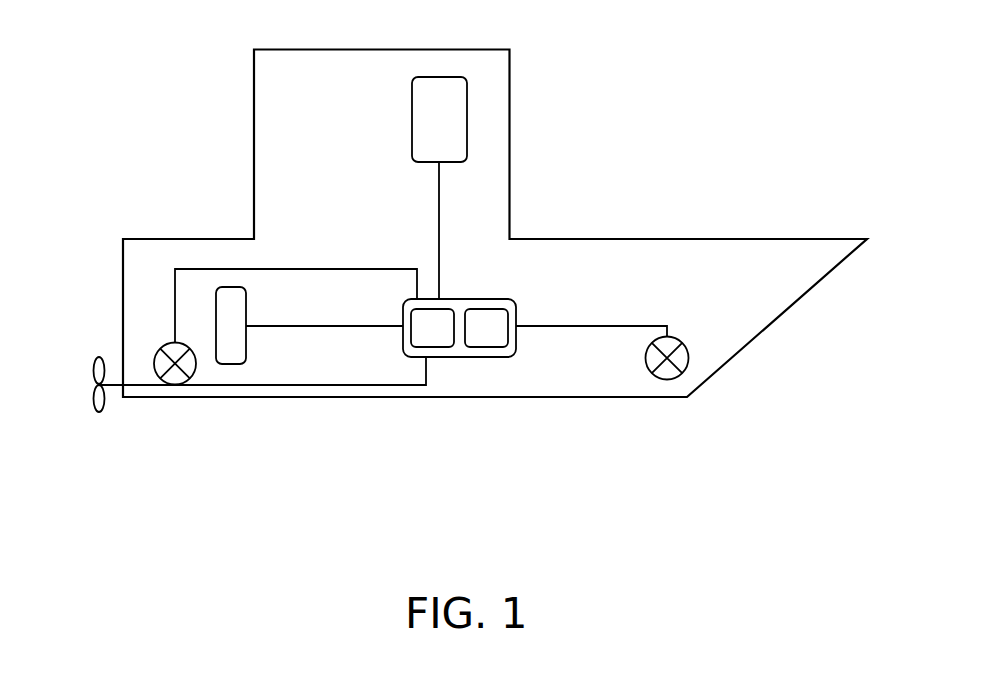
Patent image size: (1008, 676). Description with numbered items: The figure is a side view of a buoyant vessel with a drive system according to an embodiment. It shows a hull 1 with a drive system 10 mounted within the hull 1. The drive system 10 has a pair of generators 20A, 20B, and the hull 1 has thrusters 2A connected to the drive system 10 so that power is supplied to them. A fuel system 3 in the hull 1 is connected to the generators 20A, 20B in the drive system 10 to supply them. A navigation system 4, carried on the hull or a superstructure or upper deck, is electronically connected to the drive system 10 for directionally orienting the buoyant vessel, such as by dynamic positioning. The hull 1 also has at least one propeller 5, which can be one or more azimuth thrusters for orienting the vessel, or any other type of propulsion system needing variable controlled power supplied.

The hull 1 is at (828, 275).
The drive system 10 is at (488, 285).
The thruster 2A is at (153, 357).
The fuel system 3 is at (214, 303).
The navigation system 4 is at (467, 120).
The propeller 5 is at (100, 413).
The generator 20A is at (430, 347).
The generator 20B is at (487, 347).